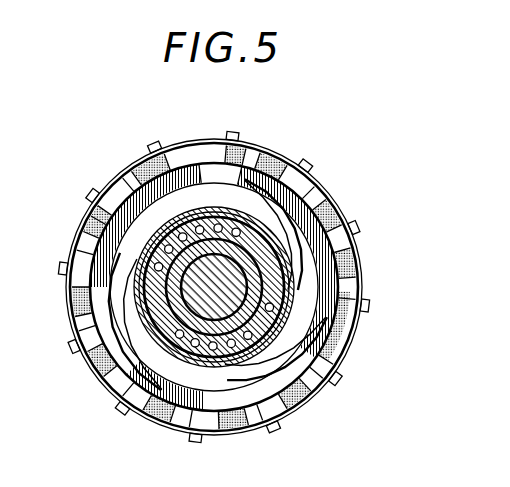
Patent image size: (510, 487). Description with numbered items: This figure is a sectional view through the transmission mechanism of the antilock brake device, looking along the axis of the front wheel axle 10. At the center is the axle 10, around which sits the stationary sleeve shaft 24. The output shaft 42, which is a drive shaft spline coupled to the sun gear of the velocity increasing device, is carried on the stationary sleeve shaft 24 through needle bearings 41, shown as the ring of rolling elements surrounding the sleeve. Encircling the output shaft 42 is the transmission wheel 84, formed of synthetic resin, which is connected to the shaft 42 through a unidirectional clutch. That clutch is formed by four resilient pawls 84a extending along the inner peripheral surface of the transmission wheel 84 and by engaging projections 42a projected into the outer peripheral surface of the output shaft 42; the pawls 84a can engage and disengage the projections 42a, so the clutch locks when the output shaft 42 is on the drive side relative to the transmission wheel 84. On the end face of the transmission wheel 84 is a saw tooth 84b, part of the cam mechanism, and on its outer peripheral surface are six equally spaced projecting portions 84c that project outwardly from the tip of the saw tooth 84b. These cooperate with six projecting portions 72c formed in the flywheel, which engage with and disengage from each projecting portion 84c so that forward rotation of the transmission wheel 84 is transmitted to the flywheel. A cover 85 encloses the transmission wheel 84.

The axle 10 is at (214, 287).
The stationary sleeve shaft 24 is at (214, 287).
The needle bearings 41 is at (168, 258).
The output shaft 42 is at (162, 258).
The engaging projections 42a is at (212, 188).
The projecting portions 72c is at (362, 230).
The transmission wheel 84 is at (266, 150).
The resilient pawls 84a is at (305, 212).
The saw tooth 84b is at (283, 170).
The projecting portions 84c is at (312, 168).
The cover 85 is at (71, 258).